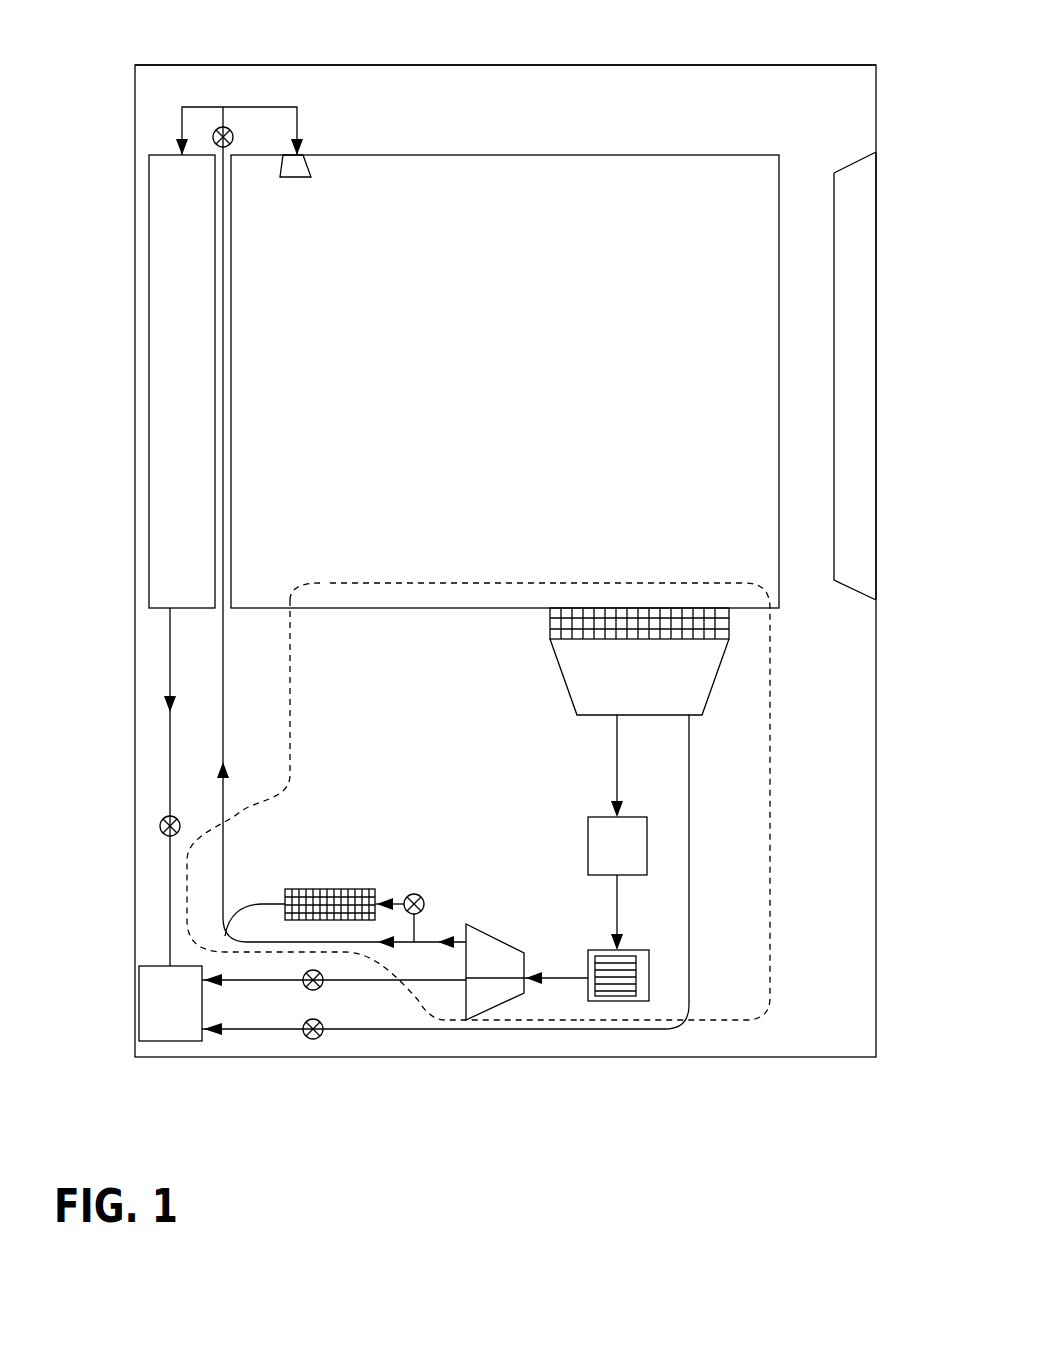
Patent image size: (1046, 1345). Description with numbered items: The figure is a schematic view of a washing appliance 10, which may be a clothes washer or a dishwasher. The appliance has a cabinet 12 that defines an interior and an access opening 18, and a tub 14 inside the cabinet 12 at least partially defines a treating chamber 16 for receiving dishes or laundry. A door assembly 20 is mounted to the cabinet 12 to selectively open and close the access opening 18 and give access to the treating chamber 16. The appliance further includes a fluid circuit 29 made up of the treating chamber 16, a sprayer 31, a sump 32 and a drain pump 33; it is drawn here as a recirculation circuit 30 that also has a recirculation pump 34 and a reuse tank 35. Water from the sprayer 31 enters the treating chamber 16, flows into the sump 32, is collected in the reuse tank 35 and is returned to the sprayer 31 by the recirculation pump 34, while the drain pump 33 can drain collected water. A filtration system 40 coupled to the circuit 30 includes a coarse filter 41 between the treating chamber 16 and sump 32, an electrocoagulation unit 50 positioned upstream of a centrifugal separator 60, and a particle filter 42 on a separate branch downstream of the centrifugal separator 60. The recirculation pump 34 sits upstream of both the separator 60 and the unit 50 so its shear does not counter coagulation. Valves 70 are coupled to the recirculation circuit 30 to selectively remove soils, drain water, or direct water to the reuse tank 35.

The washing appliance 10 is at (907, 33).
The cabinet 12 is at (513, 62).
The tub 14 is at (298, 90).
The treating chamber 16 is at (524, 373).
The access opening 18 is at (860, 210).
The door assembly 20 is at (900, 376).
The fluid circuit 29 is at (411, 622).
The recirculation circuit 30 is at (674, 192).
The sprayer 31 is at (305, 170).
The sump 32 is at (645, 668).
The drain pump 33 is at (182, 1020).
The recirculation pump 34 is at (629, 859).
The reuse tank 35 is at (195, 373).
The filtration system 40 is at (774, 762).
The coarse filter 41 is at (683, 612).
The particle filter 42 is at (336, 886).
The electrocoagulation unit 50 is at (643, 973).
The centrifugal separator 60 is at (505, 922).
The valve 70 is at (217, 128).